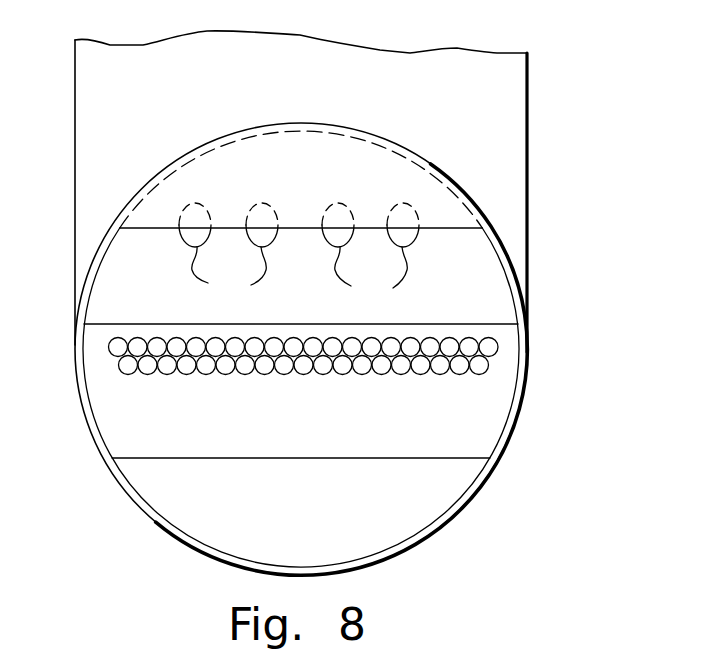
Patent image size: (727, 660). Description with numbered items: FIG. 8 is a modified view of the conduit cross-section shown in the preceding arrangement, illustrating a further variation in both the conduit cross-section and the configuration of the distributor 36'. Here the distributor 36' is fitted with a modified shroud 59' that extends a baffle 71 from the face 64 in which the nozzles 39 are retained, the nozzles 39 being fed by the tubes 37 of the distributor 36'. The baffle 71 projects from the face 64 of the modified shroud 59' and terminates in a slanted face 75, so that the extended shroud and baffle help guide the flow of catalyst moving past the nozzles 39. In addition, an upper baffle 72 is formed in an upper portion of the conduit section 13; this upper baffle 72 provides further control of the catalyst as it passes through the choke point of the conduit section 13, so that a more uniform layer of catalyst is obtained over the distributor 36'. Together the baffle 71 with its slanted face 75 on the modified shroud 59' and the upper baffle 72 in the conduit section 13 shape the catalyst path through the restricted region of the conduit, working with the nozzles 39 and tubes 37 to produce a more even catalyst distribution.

The conduit section 13 is at (483, 220).
The distributor 36' is at (349, 325).
The tubes 37 is at (301, 252).
The nozzles 39 is at (110, 345).
The modified shroud 59' is at (330, 397).
The face 64 is at (110, 403).
The baffle 71 is at (435, 522).
The upper baffle 72 is at (433, 204).
The slanted face 75 is at (207, 500).